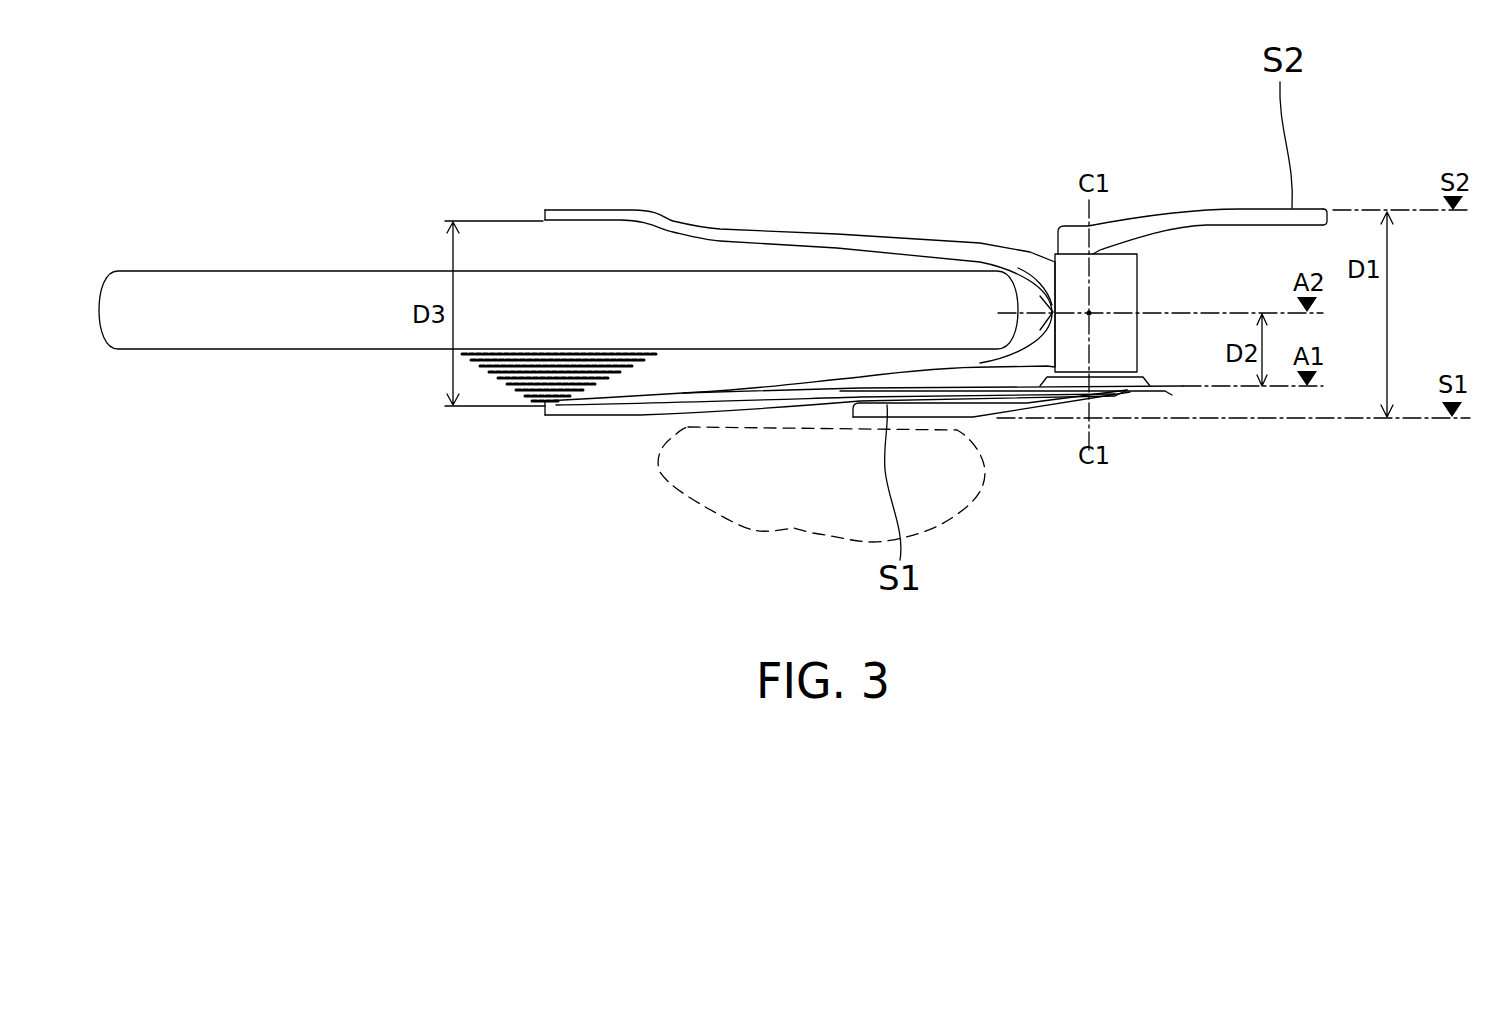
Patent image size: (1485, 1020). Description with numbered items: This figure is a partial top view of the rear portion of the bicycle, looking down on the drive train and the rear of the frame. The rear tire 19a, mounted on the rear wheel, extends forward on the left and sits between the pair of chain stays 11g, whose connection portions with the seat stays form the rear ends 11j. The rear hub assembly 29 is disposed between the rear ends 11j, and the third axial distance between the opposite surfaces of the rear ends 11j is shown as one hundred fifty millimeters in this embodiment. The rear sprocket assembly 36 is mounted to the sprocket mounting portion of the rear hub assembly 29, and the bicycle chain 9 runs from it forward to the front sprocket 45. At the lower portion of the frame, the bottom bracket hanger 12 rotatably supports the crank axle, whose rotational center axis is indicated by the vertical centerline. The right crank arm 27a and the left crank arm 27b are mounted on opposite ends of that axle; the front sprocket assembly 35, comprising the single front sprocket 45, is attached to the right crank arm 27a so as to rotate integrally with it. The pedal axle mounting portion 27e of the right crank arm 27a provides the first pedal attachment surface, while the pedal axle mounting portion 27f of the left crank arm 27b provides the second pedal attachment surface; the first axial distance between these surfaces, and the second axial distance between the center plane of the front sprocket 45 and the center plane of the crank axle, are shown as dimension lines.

The bicycle chain 9 is at (668, 398).
The chain stay 11g is at (680, 222).
The rear end 11j is at (573, 217).
The bottom bracket hanger 12 is at (1122, 278).
The rear tire 19a is at (303, 342).
The right crank arm 27a is at (1047, 417).
The left crank arm 27b is at (1240, 197).
The pedal axle mounting portion 27e is at (867, 407).
The pedal axle mounting portion 27f is at (1313, 215).
The rear sprocket assembly 36 is at (493, 421).
The rear hub assembly 29 is at (500, 385).
The front sprocket 45 is at (1041, 444).
The front sprocket assembly 35 is at (1133, 393).